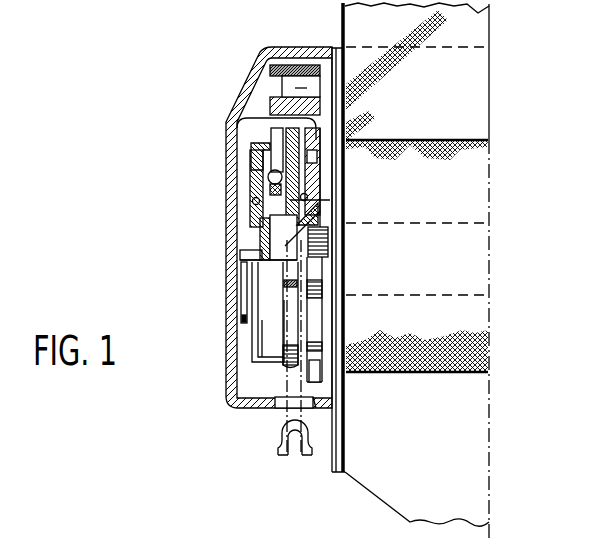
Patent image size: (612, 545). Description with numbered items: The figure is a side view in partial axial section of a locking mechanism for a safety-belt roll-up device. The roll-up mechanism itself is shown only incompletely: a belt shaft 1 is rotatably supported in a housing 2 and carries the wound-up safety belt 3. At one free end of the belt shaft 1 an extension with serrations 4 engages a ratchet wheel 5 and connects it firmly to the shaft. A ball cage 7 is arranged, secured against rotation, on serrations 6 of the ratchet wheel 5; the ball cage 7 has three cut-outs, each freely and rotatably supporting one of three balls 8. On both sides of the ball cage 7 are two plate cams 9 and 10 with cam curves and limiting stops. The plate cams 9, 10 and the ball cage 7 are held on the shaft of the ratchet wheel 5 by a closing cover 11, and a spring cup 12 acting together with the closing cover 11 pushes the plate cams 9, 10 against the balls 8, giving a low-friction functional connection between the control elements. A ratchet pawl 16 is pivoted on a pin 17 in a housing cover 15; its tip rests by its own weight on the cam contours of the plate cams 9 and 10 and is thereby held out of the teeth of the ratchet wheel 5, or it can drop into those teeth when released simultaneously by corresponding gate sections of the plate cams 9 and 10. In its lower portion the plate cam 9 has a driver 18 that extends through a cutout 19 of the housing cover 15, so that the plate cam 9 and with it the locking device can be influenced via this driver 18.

The belt shaft 1 is at (473, 222).
The housing 2 is at (477, 446).
The safety belt 3 is at (482, 23).
The serrations 4 is at (305, 252).
The ratchet wheel 5 is at (268, 116).
The serrations 6 is at (252, 212).
The ball cage 7 is at (253, 200).
The ball 8 is at (268, 178).
The plate cam 9 is at (250, 141).
The plate cam 10 is at (258, 156).
The closing cover 11 is at (247, 223).
The spring cup 12 is at (290, 178).
The housing cover 15 is at (232, 370).
The ratchet pawl 16 is at (280, 73).
The pin 17 is at (298, 88).
The driver 18 is at (279, 450).
The cutout 19 is at (278, 406).